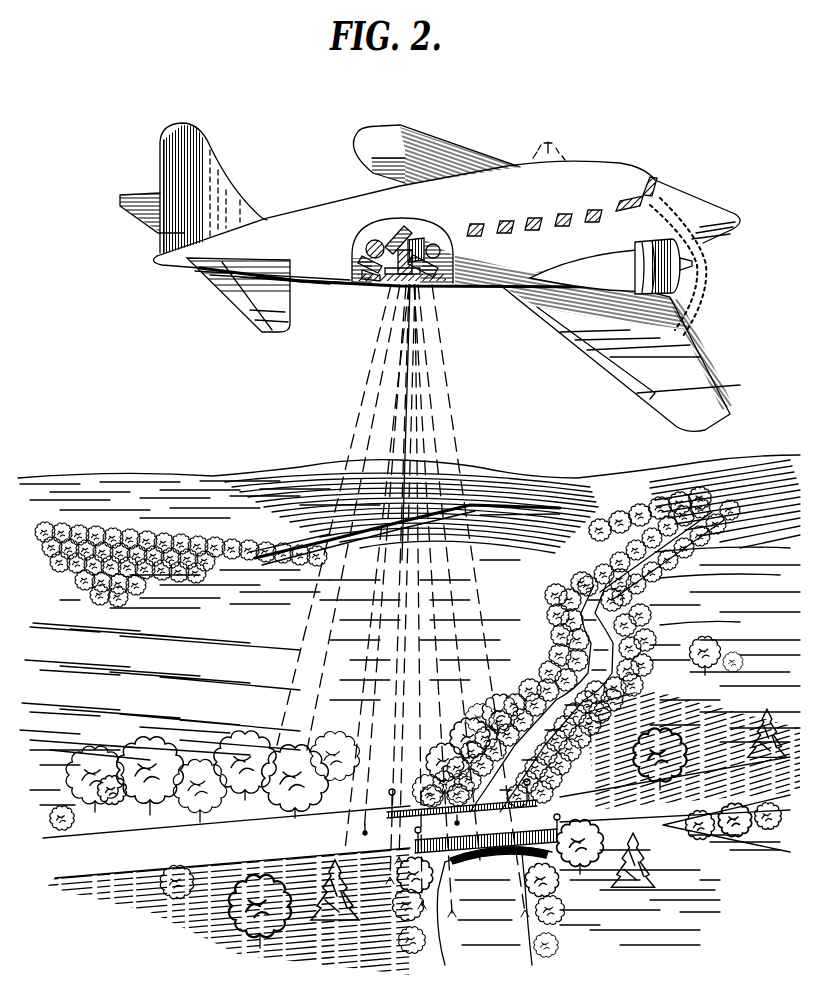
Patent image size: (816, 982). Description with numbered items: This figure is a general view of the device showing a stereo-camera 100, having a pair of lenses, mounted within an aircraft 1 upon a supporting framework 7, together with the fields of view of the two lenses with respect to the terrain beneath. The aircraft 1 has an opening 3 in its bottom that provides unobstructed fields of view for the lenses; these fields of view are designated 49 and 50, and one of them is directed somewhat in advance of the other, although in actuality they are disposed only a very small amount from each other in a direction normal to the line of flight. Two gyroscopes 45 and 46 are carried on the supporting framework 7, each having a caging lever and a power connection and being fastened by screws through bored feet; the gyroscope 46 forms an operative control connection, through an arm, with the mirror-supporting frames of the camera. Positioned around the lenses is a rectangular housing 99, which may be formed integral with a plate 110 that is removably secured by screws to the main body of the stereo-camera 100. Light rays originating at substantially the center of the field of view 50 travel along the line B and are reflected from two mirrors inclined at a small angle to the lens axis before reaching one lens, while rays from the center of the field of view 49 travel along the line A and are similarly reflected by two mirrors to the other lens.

The aircraft 1 is at (600, 163).
The opening 3 is at (392, 284).
The supporting framework 7 is at (380, 243).
The gyroscope 45 is at (368, 248).
The gyroscope 46 is at (368, 279).
The field of view 49 is at (478, 586).
The field of view 50 is at (305, 620).
The rectangular housing 99 is at (436, 285).
The stereo-camera 100 is at (408, 236).
The plate 110 is at (392, 238).
The line of travel of light rays A is at (462, 814).
The line of travel of light rays B is at (362, 826).